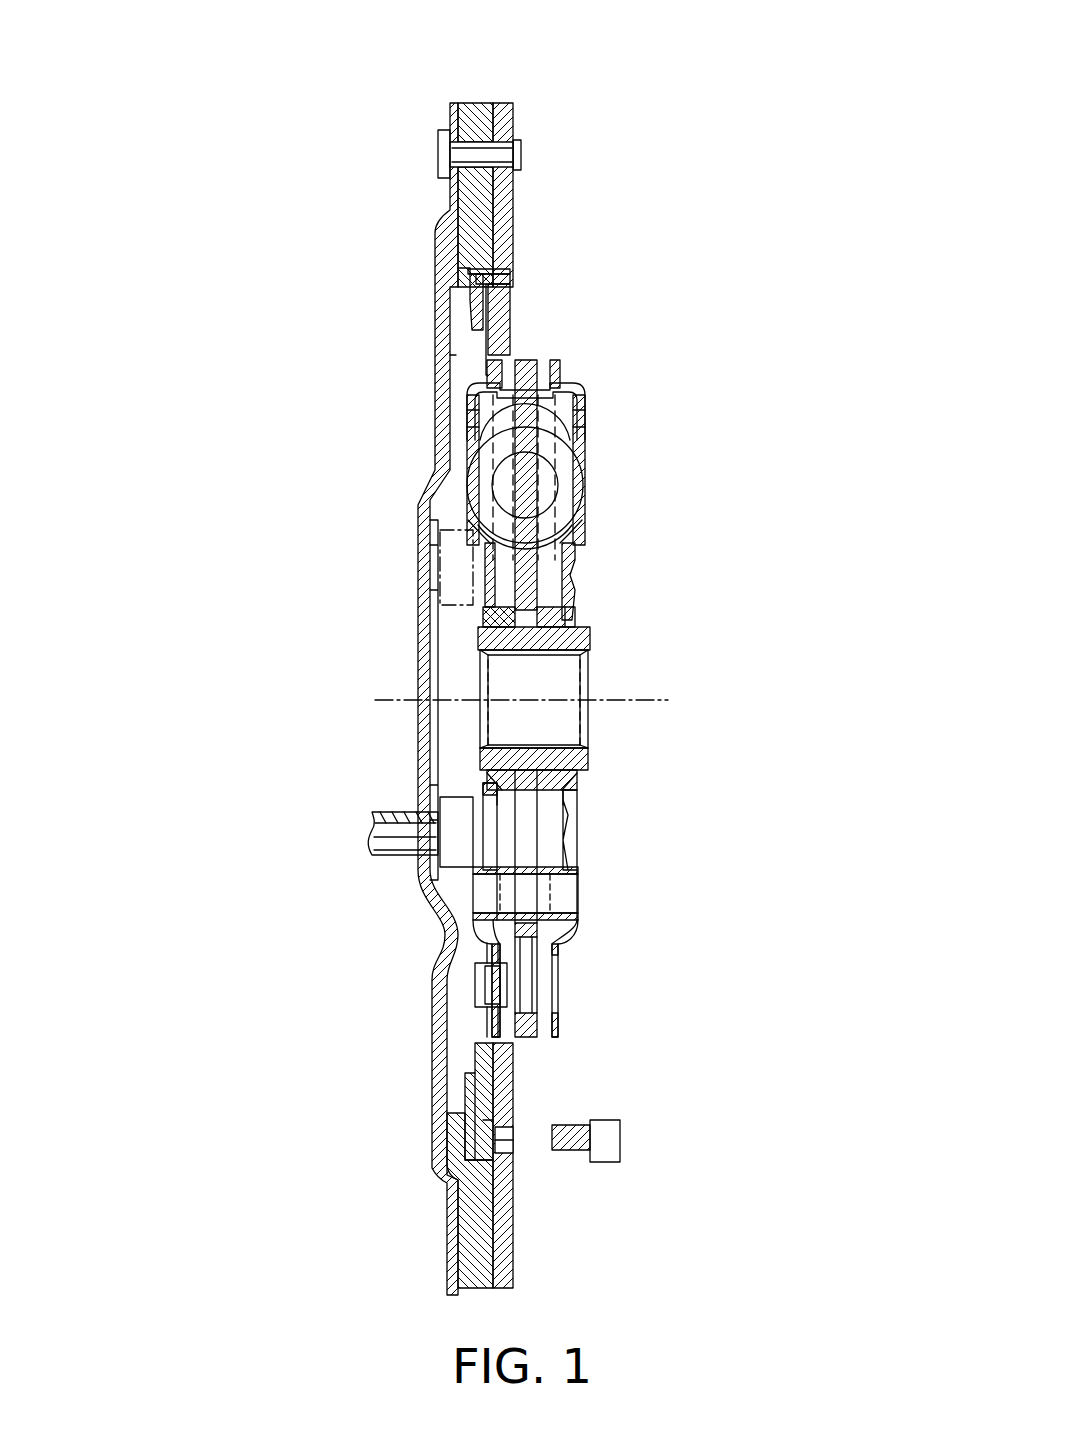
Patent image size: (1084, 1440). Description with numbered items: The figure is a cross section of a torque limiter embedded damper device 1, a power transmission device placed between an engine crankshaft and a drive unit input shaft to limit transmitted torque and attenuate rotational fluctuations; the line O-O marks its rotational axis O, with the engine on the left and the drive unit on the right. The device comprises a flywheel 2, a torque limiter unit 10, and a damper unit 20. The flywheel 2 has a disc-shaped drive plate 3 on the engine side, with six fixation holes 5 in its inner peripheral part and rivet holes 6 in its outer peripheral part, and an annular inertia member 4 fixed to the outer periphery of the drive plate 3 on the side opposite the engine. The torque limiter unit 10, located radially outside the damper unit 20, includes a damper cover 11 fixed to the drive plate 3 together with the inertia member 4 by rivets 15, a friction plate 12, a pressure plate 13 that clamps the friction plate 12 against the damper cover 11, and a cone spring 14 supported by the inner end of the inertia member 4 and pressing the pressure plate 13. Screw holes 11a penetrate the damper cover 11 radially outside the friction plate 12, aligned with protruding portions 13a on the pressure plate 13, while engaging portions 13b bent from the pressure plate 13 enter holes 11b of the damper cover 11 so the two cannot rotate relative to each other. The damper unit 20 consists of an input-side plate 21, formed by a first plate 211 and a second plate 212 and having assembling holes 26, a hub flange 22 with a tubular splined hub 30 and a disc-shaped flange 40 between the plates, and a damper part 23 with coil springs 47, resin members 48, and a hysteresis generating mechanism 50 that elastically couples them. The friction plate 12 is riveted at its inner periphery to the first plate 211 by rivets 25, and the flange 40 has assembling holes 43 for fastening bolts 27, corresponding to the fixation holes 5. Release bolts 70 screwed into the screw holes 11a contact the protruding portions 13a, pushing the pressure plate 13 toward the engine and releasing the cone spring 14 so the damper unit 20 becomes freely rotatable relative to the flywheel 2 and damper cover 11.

The torque limiter embedded damper device 1 is at (290, 262).
The flywheel 2 is at (447, 200).
The drive plate 3 is at (434, 345).
The inertia member 4 is at (482, 150).
The fixation holes 5 is at (380, 830).
The rivet holes 6 is at (447, 152).
The torque limiter unit 10 is at (548, 268).
The damper cover 11 is at (510, 198).
The screw holes 11a is at (505, 1138).
The holes 11b is at (515, 275).
The friction plate 12 is at (492, 323).
The pressure plate 13 is at (452, 325).
The protruding portions 13a is at (450, 1172).
The engaging portions 13b is at (480, 297).
The cone spring 14 is at (470, 300).
The rivets 15 is at (513, 118).
The damper unit 20 is at (640, 480).
The input-side plate 21 is at (590, 935).
The hub flange 22 is at (612, 615).
The damper part 23 is at (592, 468).
The rivets 25 is at (480, 985).
The assembling holes 26 is at (572, 807).
The bolts 27 is at (457, 807).
The hub 30 is at (580, 642).
The flange 40 is at (523, 575).
The assembling holes 43 is at (523, 792).
The coil springs 47 is at (483, 470).
The resin members 48 is at (503, 887).
The hysteresis generating mechanism 50 is at (478, 618).
The release bolts 70 is at (620, 1140).
The first plate 211 is at (480, 930).
The second plate 212 is at (578, 880).
The rotational axis O is at (523, 697).